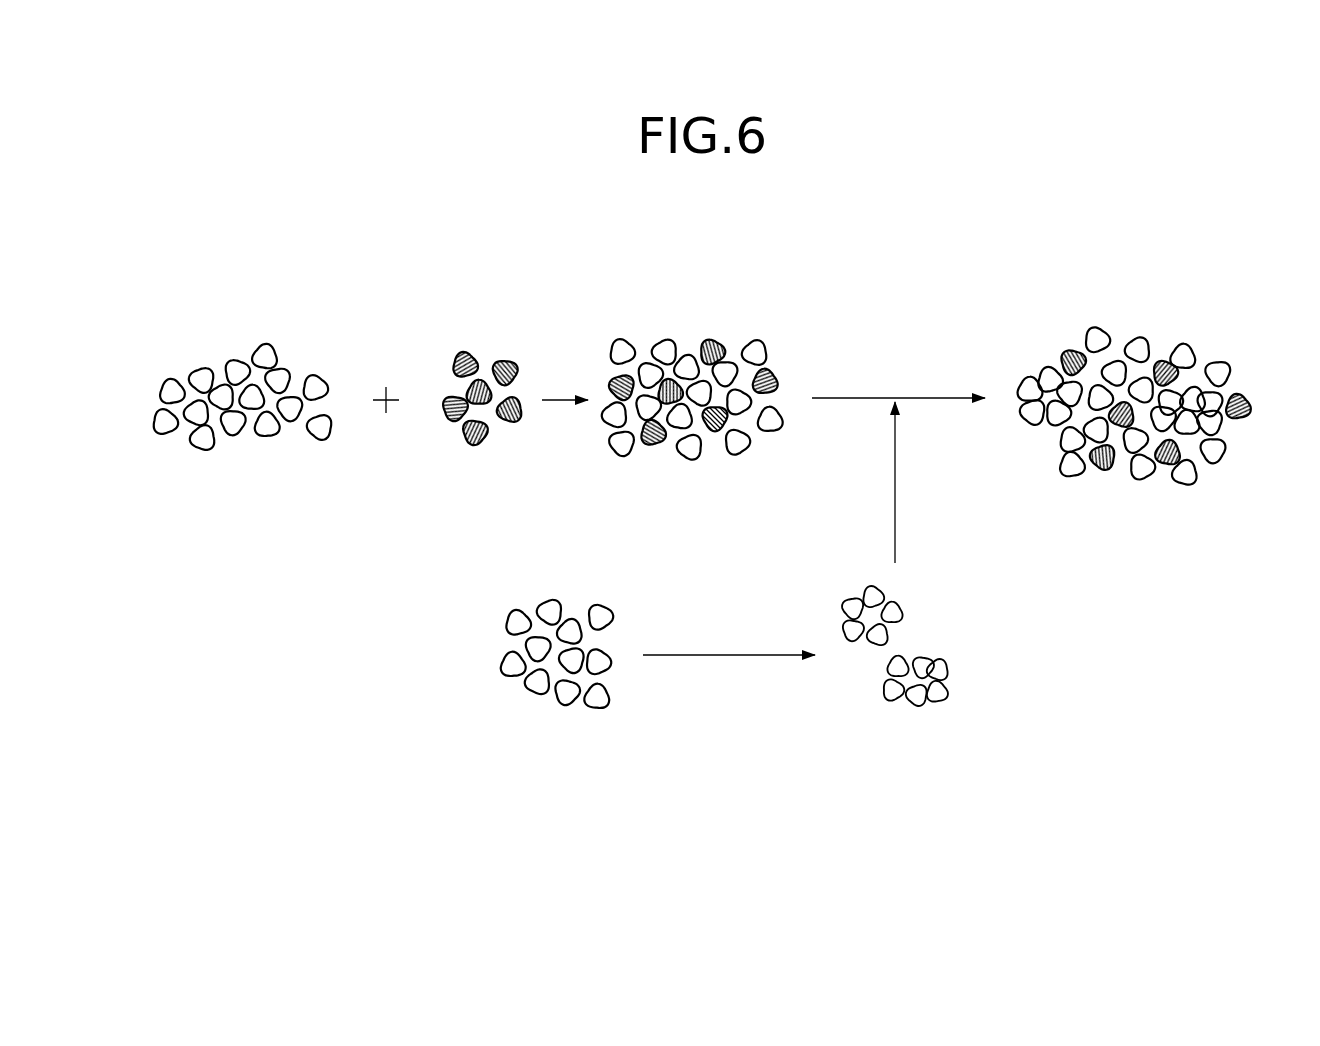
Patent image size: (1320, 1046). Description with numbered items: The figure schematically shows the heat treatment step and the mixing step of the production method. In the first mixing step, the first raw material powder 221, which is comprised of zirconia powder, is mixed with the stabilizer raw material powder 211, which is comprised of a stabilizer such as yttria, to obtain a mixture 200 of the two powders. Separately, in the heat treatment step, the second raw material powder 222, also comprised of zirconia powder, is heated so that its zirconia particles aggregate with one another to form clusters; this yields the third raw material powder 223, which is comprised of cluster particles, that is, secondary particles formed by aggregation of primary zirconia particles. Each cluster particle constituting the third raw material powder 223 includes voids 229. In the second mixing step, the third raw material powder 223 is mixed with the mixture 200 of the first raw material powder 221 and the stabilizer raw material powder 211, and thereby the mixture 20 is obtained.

The first raw material powder 221 is at (247, 325).
The stabilizer raw material powder 211 is at (483, 320).
The mixture of the first raw material powder and the stabilizer raw material powder 200 is at (687, 302).
The mixture 20 is at (1157, 283).
The second raw material powder 222 is at (472, 655).
The third raw material powder 223 is at (968, 700).
The voids 229 is at (868, 645).